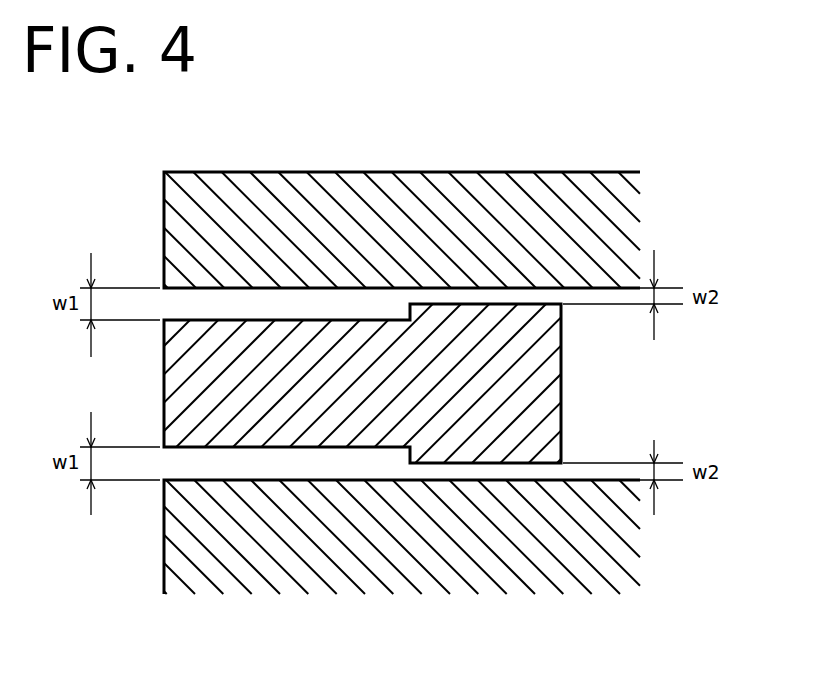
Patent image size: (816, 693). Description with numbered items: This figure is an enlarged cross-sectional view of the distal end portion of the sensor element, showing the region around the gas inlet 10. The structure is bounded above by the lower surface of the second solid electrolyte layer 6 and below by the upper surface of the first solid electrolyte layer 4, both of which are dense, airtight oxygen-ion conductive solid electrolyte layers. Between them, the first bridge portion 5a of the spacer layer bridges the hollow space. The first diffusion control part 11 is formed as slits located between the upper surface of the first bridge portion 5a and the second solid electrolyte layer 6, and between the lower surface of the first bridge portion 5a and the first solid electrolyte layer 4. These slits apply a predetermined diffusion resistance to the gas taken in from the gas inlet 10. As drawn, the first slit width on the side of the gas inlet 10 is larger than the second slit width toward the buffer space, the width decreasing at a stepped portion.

The first solid electrolyte layer 4 is at (512, 581).
The first bridge portion 5a is at (387, 380).
The second solid electrolyte layer 6 is at (509, 188).
The gas inlet 10 is at (163, 301).
The first diffusion control part 11 is at (247, 303).